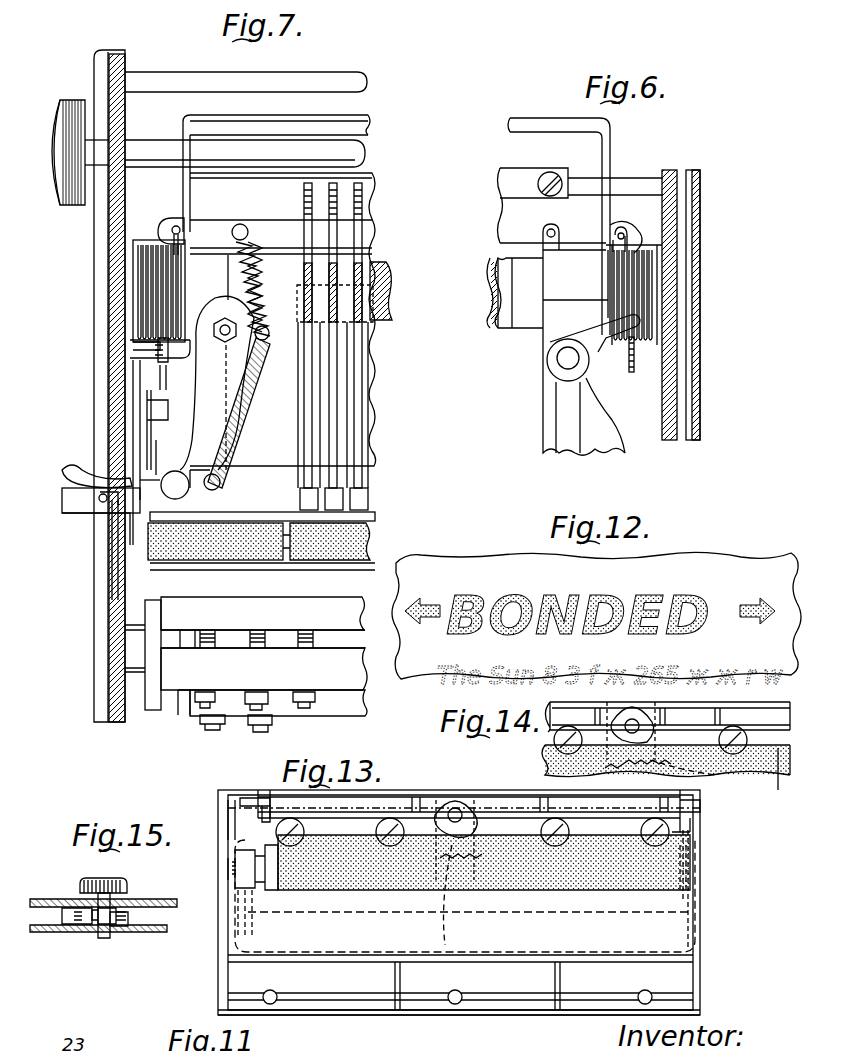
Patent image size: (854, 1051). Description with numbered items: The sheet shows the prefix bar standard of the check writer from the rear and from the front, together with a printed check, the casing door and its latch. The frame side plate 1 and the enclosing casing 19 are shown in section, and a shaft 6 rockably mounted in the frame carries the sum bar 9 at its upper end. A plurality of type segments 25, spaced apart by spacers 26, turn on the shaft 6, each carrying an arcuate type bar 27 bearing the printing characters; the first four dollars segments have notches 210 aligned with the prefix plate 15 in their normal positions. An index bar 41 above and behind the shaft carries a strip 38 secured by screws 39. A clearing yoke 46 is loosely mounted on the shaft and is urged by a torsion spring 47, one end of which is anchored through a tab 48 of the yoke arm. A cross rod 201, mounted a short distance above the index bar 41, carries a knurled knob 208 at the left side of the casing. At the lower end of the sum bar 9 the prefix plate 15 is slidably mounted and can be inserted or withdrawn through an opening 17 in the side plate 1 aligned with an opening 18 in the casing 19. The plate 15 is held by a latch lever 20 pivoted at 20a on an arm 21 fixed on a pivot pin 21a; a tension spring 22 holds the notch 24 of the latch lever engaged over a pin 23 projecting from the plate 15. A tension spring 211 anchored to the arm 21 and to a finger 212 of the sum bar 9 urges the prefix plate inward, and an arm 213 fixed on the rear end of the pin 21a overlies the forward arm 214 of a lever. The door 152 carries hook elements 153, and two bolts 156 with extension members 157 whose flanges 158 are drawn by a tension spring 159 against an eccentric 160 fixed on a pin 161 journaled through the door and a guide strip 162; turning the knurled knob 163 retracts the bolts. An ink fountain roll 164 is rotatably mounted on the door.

In FIG. 7, the side plate 1 is at (120, 62).
In FIG. 7, the shaft 6 is at (388, 280).
In FIG. 6, the shaft 6 is at (497, 305).
In FIG. 7, the sum bar 9 is at (244, 440).
In FIG. 6, the sum bar 9 is at (550, 420).
In FIG. 7, the prefix plate 15 is at (75, 506).
In FIG. 13, the prefix plate 15 is at (512, 784).
In FIG. 7, the opening 17 is at (112, 580).
In FIG. 7, the opening 18 is at (95, 458).
In FIG. 7, the enclosing casing 19 is at (94, 330).
In FIG. 6, the enclosing casing 19 is at (704, 224).
In FIG. 7, the latch lever 20 is at (75, 475).
In FIG. 7, the pivot 20a is at (192, 478).
In FIG. 7, the arm 21 is at (246, 364).
In FIG. 7, the pivot pin 21a is at (232, 318).
In FIG. 6, the pivot pin 21a is at (560, 358).
In FIG. 7, the tension spring 22 is at (242, 390).
In FIG. 7, the pin 23 is at (97, 505).
In FIG. 7, the notch 24 is at (104, 508).
In FIG. 7, the type segments 25 is at (358, 451).
In FIG. 7, the spacers 26 is at (345, 270).
In FIG. 7, the arcuate type bar 27 is at (365, 518).
In FIG. 6, the strip 38 is at (500, 182).
In FIG. 6, the screws 39 is at (552, 172).
In FIG. 6, the index bar 41 is at (640, 178).
In FIG. 7, the clearing yoke 46 is at (355, 116).
In FIG. 6, the clearing yoke 46 is at (540, 120).
In FIG. 7, the torsion spring 47 is at (140, 278).
In FIG. 6, the torsion spring 47 is at (640, 280).
In FIG. 7, the tab 48 is at (172, 220).
In FIG. 6, the tab 48 is at (618, 224).
In FIG. 13, the door 152 is at (214, 962).
In FIG. 15, the door 152 is at (212, 962).
In FIG. 13, the hook element 153 is at (695, 960).
In FIG. 14, the bolts 156 is at (770, 772).
In FIG. 13, the bolts 156 is at (248, 798).
In FIG. 14, the extension members 157 is at (667, 717).
In FIG. 13, the extension members 157 is at (422, 793).
In FIG. 15, the extension members 157 is at (160, 898).
In FIG. 15, the flanges 158 is at (92, 900).
In FIG. 14, the tension spring 159 is at (712, 790).
In FIG. 13, the tension spring 159 is at (440, 905).
In FIG. 15, the tension spring 159 is at (128, 930).
In FIG. 14, the eccentric 160 is at (758, 762).
In FIG. 13, the eccentric 160 is at (448, 805).
In FIG. 15, the eccentric 160 is at (92, 938).
In FIG. 15, the pin 161 is at (104, 938).
In FIG. 14, the guide strip 162 is at (778, 748).
In FIG. 13, the guide strip 162 is at (398, 826).
In FIG. 15, the guide strip 162 is at (66, 935).
In FIG. 15, the knurled knob 163 is at (108, 878).
In FIG. 7, the fountain roll 164 is at (242, 548).
In FIG. 14, the fountain roll 164 is at (760, 778).
In FIG. 13, the fountain roll 164 is at (355, 880).
In FIG. 7, the cross rod 201 is at (355, 160).
In FIG. 7, the knurled knob 208 is at (72, 100).
In FIG. 7, the notches 210 is at (365, 496).
In FIG. 7, the tension spring 211 is at (256, 250).
In FIG. 7, the finger 212 is at (228, 255).
In FIG. 6, the finger 212 is at (545, 238).
In FIG. 6, the arm 213 is at (573, 338).
In FIG. 6, the forward arm 214 is at (635, 370).